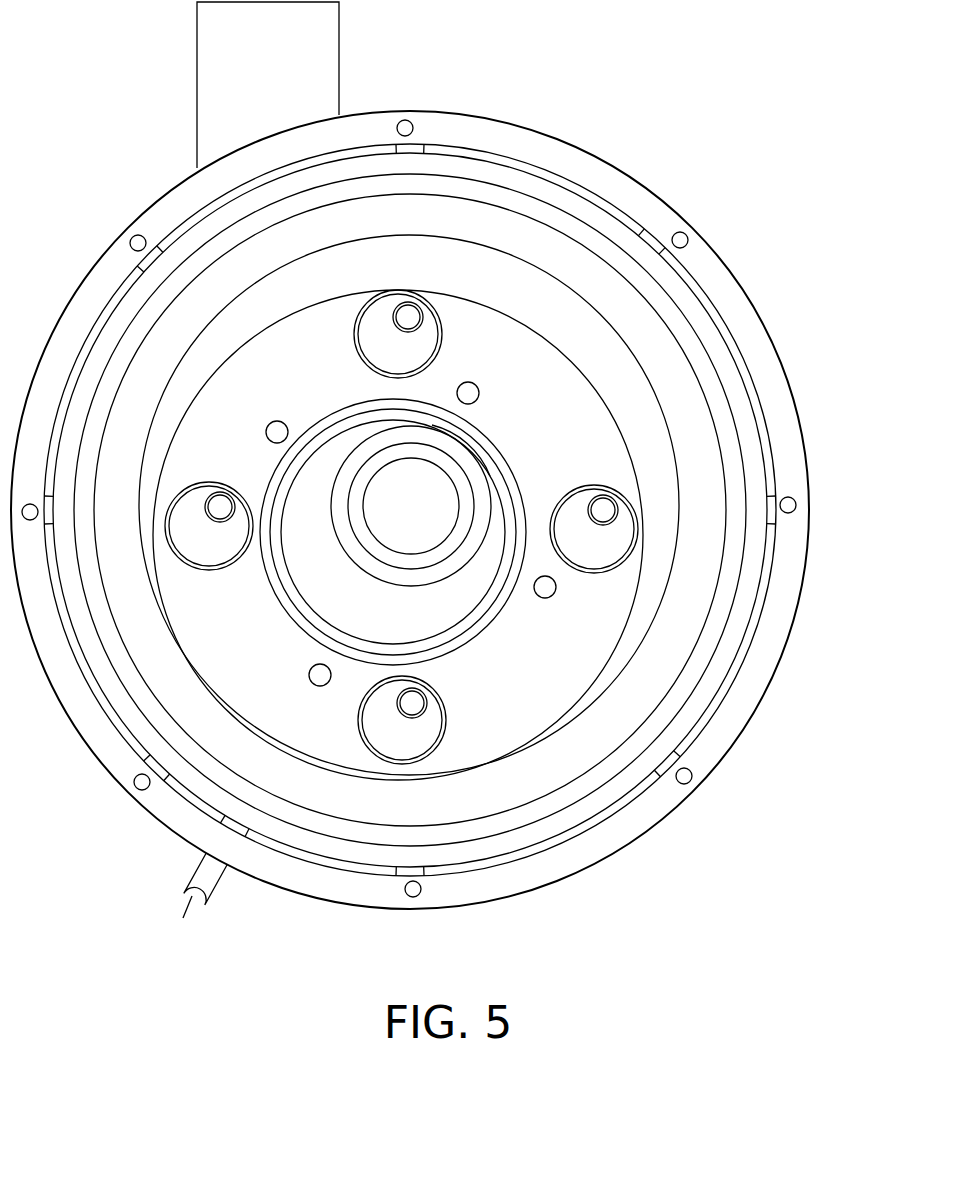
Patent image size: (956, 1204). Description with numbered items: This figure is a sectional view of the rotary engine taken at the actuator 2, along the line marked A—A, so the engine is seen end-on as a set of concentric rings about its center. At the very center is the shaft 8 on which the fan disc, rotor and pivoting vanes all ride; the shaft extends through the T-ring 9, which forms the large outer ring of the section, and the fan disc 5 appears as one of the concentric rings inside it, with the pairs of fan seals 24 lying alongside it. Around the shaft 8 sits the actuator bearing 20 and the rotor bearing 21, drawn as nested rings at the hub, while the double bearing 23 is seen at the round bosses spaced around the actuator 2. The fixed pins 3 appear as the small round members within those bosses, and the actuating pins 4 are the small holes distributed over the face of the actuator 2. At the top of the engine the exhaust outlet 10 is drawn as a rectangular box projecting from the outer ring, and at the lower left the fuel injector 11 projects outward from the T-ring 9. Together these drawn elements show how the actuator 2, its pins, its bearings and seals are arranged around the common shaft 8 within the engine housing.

The actuator 2 is at (305, 381).
The fixed pins 3 is at (598, 494).
The actuating pins 4 is at (480, 393).
The fan disc 5 is at (507, 163).
The shaft 8 is at (370, 521).
The T-ring 9 is at (438, 109).
The exhaust outlet 10 is at (284, 86).
The fuel injector 11 is at (188, 889).
The actuator bearing 20 is at (473, 650).
The rotor bearing 21 is at (393, 532).
The double bearing 23 is at (590, 573).
The fan seals 24 is at (555, 205).